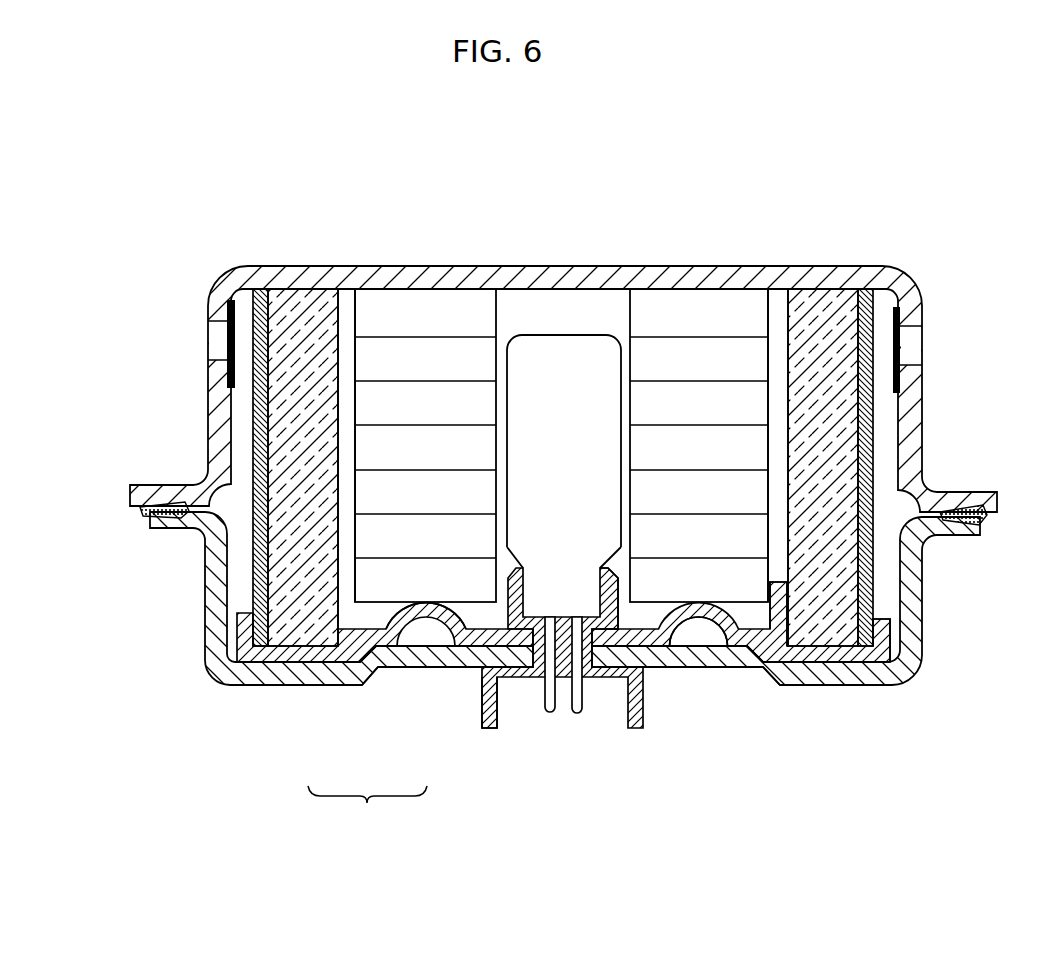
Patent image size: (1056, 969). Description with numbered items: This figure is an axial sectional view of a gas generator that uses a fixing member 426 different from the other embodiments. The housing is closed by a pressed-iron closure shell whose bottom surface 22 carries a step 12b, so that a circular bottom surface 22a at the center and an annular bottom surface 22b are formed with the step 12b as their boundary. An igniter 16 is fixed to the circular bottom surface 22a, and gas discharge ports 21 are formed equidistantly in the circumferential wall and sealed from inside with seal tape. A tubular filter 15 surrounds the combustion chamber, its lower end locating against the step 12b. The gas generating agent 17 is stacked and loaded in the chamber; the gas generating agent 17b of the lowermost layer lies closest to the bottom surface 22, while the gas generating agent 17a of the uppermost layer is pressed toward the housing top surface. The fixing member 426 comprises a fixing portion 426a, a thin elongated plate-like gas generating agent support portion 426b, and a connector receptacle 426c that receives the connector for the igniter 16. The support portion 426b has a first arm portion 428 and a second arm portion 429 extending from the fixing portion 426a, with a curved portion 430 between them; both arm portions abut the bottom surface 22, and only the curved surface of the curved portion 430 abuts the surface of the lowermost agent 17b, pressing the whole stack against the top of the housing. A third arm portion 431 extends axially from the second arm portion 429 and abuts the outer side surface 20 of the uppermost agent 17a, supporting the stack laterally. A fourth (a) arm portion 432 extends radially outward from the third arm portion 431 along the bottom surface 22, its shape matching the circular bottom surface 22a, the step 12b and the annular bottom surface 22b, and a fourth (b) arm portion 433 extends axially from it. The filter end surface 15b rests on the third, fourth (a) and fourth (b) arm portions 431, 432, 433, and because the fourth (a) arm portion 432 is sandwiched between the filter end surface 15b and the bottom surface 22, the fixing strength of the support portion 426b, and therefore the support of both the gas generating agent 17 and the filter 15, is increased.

The filter 15 is at (298, 297).
The filter end surface 15b is at (290, 654).
The side surface of the gas generating agent 20 is at (352, 317).
The gas generating agent 17 is at (437, 424).
The gas generating agent of the uppermost layer 17a is at (438, 312).
The gas generating agent of the lowermost layer 17b is at (370, 570).
The igniter 16 is at (586, 426).
The gas discharge ports 21 is at (224, 341).
The bottom surface of the housing 22 is at (367, 812).
The circular bottom surface 22a is at (435, 667).
The annular bottom surface 22b is at (313, 686).
The step 12b is at (377, 668).
The fixing member 426 is at (534, 681).
The fixing portion 426a is at (614, 597).
The gas generating agent support portion 426b is at (423, 604).
The connector receptacle 426c is at (479, 715).
The first arm portion 428 is at (657, 670).
The second arm portion 429 is at (751, 670).
The curved portion 430 is at (694, 624).
The third arm portion 431 is at (782, 592).
The fourth (a) arm portion 432 is at (832, 661).
The fourth (b) arm portion 433 is at (885, 637).